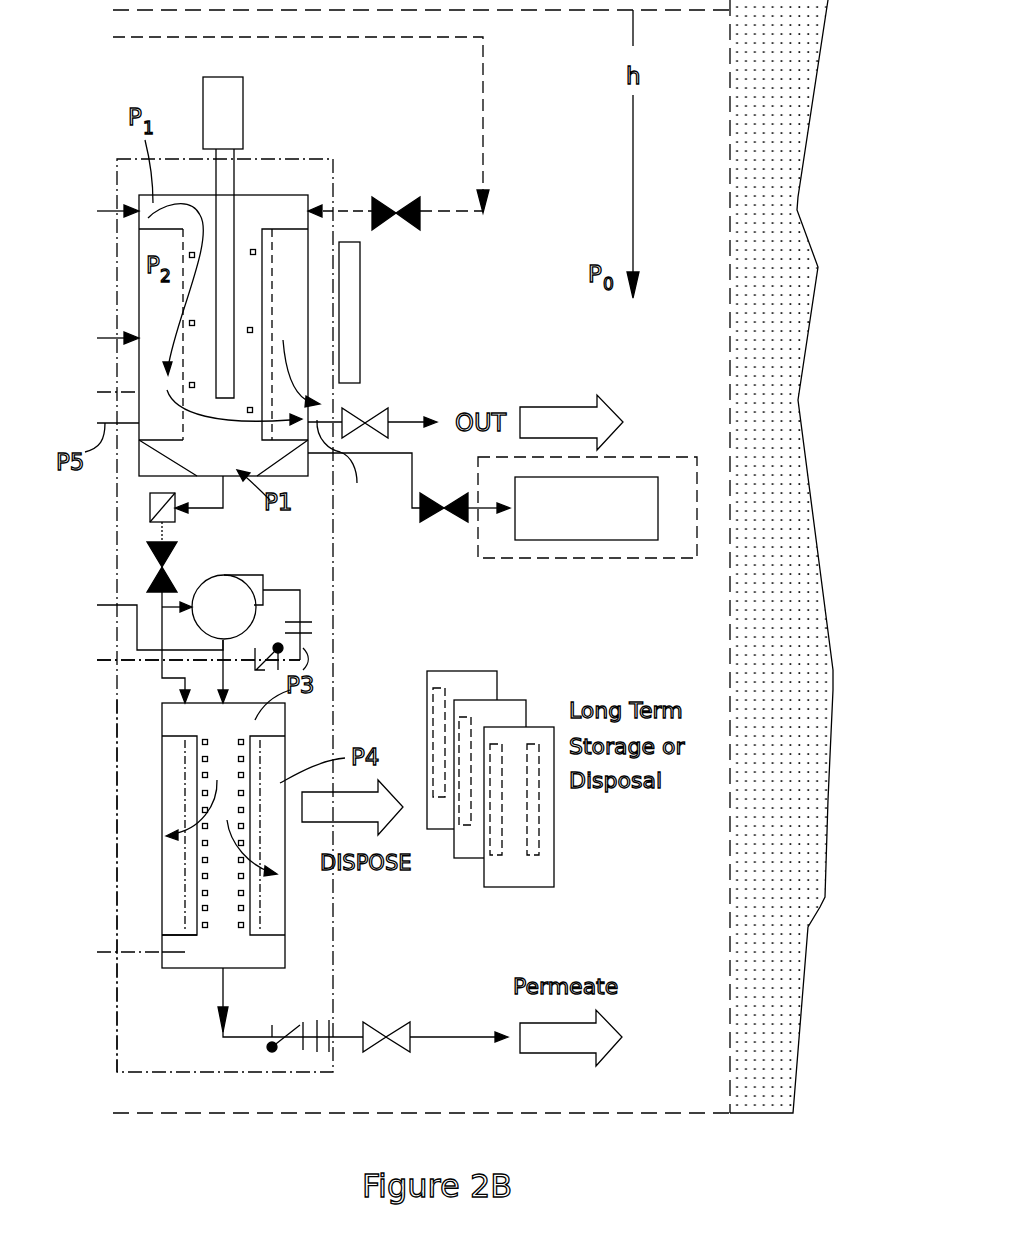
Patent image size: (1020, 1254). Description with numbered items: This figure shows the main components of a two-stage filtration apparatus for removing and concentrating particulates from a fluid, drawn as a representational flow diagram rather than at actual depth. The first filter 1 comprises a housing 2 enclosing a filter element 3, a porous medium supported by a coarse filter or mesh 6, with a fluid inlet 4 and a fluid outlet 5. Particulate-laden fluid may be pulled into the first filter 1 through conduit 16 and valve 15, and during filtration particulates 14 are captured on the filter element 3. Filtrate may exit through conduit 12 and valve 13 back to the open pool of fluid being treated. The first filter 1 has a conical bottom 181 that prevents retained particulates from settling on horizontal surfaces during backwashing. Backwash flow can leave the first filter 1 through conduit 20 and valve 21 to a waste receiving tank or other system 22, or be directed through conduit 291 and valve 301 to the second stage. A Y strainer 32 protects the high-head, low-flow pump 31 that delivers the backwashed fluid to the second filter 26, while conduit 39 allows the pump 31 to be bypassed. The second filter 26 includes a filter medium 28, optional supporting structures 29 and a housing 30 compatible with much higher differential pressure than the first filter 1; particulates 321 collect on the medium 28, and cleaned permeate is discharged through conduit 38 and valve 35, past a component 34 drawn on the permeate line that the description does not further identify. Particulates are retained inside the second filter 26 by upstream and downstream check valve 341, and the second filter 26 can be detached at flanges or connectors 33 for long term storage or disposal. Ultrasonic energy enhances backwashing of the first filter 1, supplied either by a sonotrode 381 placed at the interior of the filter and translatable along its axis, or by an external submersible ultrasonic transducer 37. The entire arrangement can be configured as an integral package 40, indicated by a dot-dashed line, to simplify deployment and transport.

The first filter 1 is at (300, 200).
The housing 2 is at (139, 295).
The filter element 3 is at (262, 263).
The fluid inlet 4 is at (105, 208).
The fluid outlet 5 is at (341, 462).
The coarse filter or mesh 6 is at (272, 298).
The conduit 12 is at (325, 422).
The valve 13 is at (385, 413).
The particulates 14 is at (256, 250).
The valve 15 is at (403, 200).
The conduit 16 is at (483, 67).
The conduit 20 is at (412, 478).
The valve 21 is at (437, 522).
The waste receiving system 22 is at (600, 560).
The second filter 26 is at (287, 720).
The filter medium 28 is at (250, 770).
The supporting structures 29 is at (262, 907).
The housing 30 is at (160, 817).
The pump 31 is at (263, 578).
The Y strainer 32 is at (150, 508).
The flanges or connectors 33 is at (310, 640).
The flow sensor 34 is at (278, 1058).
The valve 35 is at (380, 1045).
The submersible ultrasonic transducer 37 is at (360, 280).
The conduit 38 is at (217, 993).
The conduit 39 is at (162, 673).
The integral package 40 is at (113, 740).
The conical bottom 181 is at (175, 465).
The conduit 291 is at (223, 508).
The valve 301 is at (177, 575).
The particulates 321 is at (180, 937).
The check valve 341 is at (278, 643).
The sonotrode 381 is at (243, 90).